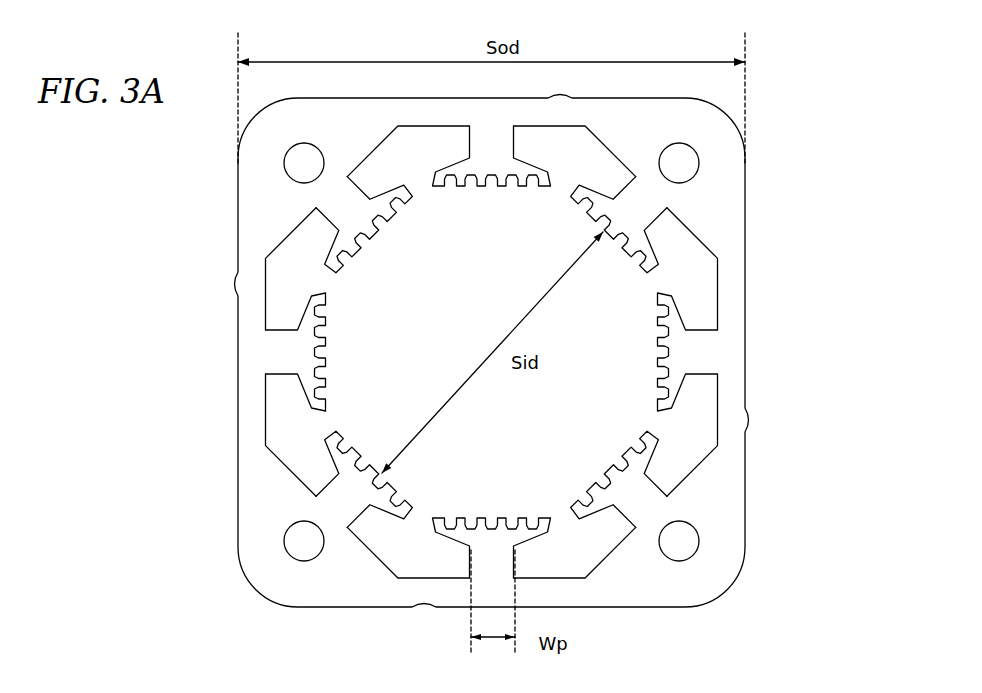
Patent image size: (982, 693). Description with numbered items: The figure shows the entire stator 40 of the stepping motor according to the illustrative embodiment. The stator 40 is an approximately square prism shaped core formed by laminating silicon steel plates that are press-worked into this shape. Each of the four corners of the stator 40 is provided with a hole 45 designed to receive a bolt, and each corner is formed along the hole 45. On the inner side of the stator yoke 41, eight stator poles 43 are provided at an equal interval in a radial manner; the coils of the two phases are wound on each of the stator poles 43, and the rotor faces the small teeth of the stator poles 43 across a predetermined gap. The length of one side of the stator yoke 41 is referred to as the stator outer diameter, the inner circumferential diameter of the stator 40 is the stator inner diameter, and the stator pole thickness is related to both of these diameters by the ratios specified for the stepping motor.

The stator 40 is at (513, 351).
The stator yoke 41 is at (746, 356).
The stator pole 43 is at (358, 186).
The hole 45 is at (284, 164).